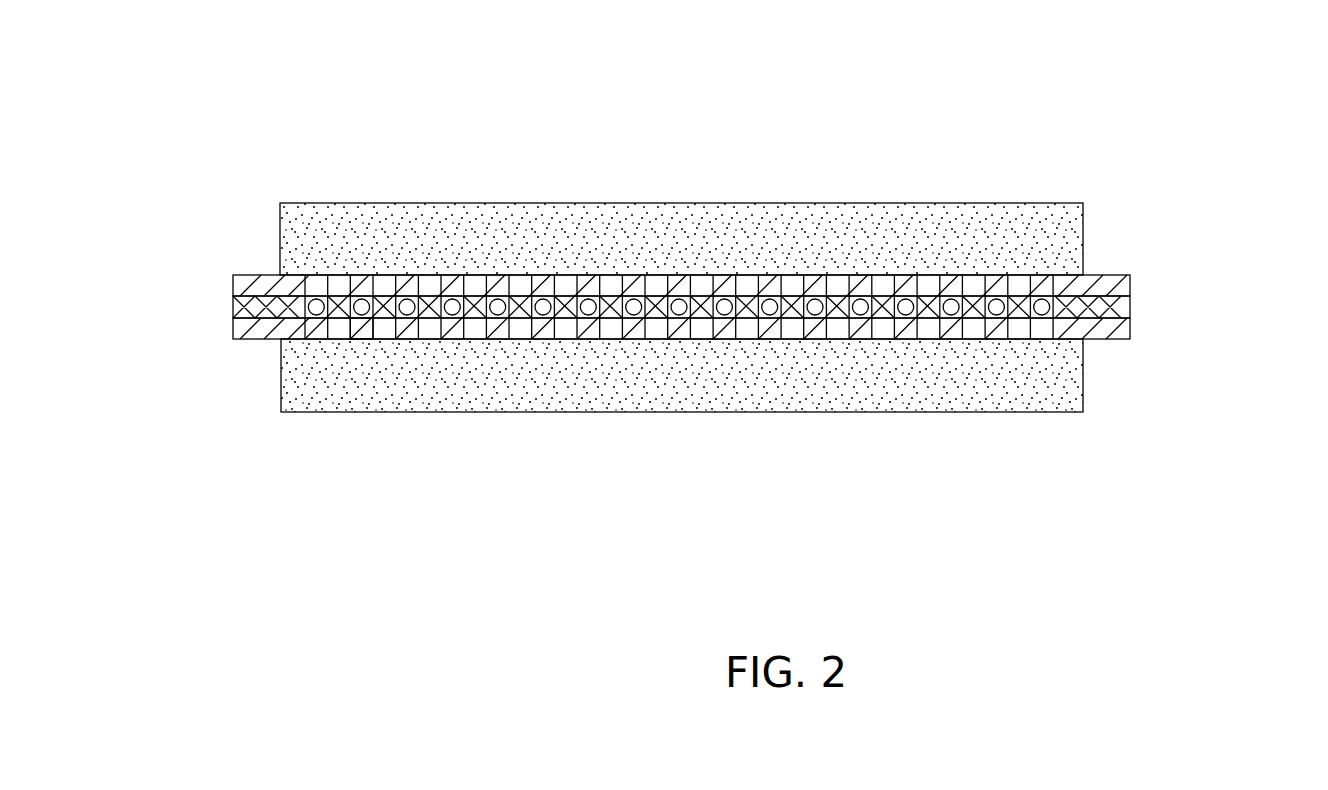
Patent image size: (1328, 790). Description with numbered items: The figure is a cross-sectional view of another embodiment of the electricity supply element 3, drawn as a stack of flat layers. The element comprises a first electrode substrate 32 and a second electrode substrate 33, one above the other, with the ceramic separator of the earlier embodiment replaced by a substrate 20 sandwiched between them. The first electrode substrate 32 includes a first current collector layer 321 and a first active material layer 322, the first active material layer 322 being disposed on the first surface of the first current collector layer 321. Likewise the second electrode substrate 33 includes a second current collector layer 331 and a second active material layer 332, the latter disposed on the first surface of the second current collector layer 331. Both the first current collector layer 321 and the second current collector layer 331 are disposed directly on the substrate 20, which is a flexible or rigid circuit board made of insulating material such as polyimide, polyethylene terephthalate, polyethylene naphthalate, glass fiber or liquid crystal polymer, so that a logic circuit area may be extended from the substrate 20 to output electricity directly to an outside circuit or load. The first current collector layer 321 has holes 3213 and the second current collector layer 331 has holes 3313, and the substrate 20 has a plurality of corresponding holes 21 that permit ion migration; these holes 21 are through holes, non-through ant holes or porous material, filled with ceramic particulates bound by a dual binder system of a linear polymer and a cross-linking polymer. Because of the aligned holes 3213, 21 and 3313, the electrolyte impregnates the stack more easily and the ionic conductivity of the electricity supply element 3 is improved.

The electricity supply element 3 is at (296, 107).
The substrate 20 is at (233, 303).
The holes 21 is at (318, 303).
The first electrode substrate 32 is at (1238, 203).
The first current collector layer 321 is at (1130, 284).
The first active material layer 322 is at (1083, 233).
The holes 3213 is at (408, 275).
The second electrode substrate 33 is at (1257, 307).
The second current collector layer 331 is at (1130, 325).
The second active material layer 332 is at (1083, 379).
The holes 3313 is at (363, 318).